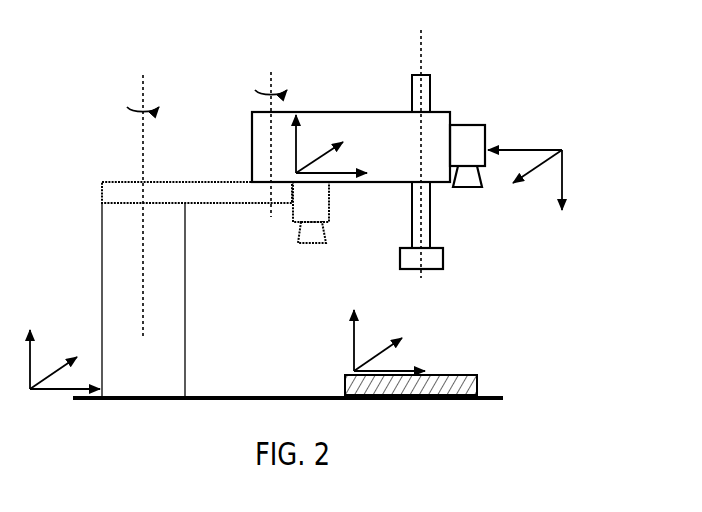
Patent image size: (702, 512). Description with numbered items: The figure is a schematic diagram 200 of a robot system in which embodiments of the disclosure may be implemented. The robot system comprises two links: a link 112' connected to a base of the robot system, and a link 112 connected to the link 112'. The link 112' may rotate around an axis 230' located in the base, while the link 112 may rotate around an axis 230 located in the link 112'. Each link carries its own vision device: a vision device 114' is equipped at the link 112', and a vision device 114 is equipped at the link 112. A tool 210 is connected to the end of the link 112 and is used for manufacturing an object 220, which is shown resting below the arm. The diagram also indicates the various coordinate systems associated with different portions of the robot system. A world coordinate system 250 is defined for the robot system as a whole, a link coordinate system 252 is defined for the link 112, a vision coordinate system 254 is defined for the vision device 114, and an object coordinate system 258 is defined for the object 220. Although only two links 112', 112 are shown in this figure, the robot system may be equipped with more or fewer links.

The schematic diagram 200 is at (142, 29).
The link 112 is at (351, 154).
The link 112' is at (197, 174).
The vision device 114 is at (494, 138).
The vision device 114' is at (280, 212).
The tool 210 is at (401, 251).
The object 220 is at (461, 375).
The axis 230 is at (293, 136).
The axis 230' is at (170, 203).
The world coordinate system 250 is at (31, 362).
The link coordinate system 252 is at (298, 144).
The vision coordinate system 254 is at (530, 150).
The object coordinate system 258 is at (356, 341).